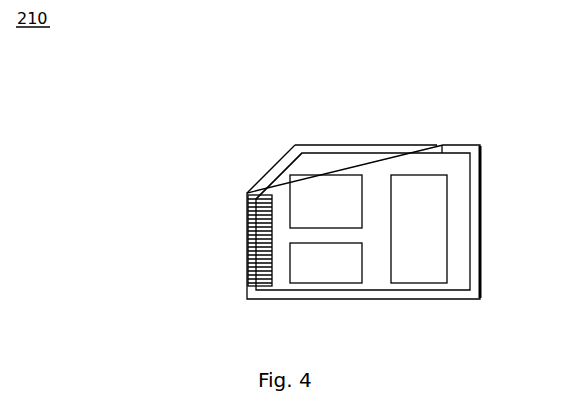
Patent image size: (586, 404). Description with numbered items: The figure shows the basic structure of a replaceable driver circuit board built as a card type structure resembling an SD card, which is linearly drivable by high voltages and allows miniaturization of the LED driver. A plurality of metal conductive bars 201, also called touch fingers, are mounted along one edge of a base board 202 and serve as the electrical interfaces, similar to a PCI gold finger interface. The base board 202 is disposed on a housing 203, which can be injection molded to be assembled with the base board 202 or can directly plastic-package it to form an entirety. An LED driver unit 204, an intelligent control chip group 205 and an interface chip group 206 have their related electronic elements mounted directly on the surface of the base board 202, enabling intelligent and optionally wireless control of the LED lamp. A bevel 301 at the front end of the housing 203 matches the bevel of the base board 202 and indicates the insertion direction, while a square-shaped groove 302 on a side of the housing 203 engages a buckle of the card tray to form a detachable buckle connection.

The metal conductive bars 201 is at (250, 280).
The base board 202 is at (283, 203).
The housing 203 is at (272, 168).
The LED driver unit 204 is at (345, 183).
The intelligent control chip group 205 is at (418, 183).
The interface chip group 206 is at (347, 277).
The bevel 301 is at (271, 163).
The square-shaped groove 302 is at (437, 140).